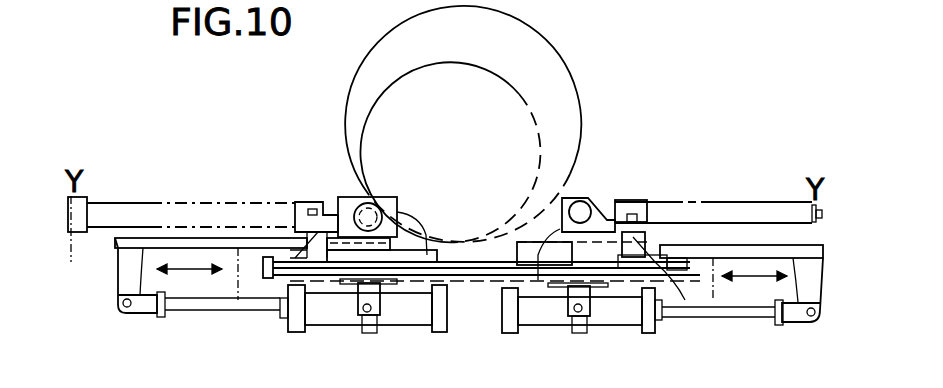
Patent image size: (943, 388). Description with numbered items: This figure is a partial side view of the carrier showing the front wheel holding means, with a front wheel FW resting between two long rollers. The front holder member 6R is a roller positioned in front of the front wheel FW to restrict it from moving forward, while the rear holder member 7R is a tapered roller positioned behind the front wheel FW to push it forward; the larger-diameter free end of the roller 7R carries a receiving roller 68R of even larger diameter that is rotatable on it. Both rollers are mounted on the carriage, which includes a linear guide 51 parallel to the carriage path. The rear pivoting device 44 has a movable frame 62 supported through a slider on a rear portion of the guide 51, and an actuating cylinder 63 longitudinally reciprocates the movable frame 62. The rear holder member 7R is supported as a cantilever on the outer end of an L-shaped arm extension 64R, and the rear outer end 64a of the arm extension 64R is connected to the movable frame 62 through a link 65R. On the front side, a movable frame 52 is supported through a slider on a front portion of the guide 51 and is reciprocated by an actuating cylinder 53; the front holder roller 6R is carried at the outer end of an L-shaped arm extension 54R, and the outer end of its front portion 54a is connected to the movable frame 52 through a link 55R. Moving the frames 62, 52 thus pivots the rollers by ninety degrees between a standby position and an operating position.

The front wheel FW is at (465, 64).
The rear pivoting device 44 is at (263, 203).
The movable frame 62 is at (177, 243).
The movable frame 52 is at (742, 248).
The rear holder member 7R is at (107, 212).
The front holder member 6R is at (582, 205).
The receiving roller 68R is at (371, 205).
The rear outer end 64a is at (335, 205).
The front portion 54a is at (596, 203).
The linear guide 51 is at (477, 270).
The actuating cylinder 63 is at (336, 310).
The actuating cylinder 53 is at (622, 312).
The L-shaped arm extension 64R is at (427, 255).
The L-shaped arm extension 54R is at (538, 280).
The link 65R is at (295, 258).
The link 55R is at (685, 300).